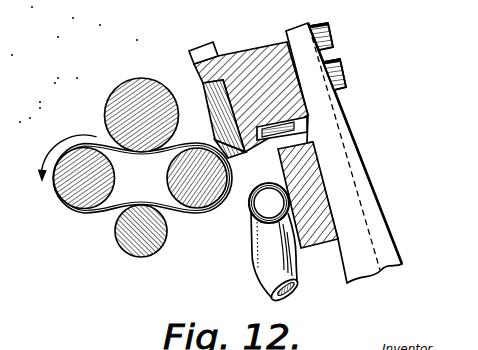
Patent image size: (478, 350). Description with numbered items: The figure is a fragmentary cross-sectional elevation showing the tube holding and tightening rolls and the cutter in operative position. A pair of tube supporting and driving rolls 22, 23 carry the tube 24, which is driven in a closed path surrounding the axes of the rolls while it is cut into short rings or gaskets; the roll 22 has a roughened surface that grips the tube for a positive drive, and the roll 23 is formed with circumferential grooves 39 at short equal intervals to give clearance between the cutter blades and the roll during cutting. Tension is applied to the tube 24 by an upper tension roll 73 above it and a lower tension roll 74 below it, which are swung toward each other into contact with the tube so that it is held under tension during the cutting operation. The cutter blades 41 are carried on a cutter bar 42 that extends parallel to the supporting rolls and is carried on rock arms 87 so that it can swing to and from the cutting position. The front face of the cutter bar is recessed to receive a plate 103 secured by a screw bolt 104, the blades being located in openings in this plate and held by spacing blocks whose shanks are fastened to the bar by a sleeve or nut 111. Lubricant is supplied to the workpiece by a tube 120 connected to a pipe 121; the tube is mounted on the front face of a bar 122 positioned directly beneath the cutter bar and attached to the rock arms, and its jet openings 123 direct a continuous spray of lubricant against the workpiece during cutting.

The tube supporting and driving roll 22 is at (82, 189).
The tube supporting and driving roll 23 is at (203, 197).
The tube 24 is at (101, 151).
The circumferential grooves 39 is at (172, 202).
The cutter blade 41 is at (216, 148).
The cutter bar 42 is at (252, 48).
The upper tension roll 73 is at (135, 88).
The lower tension roll 74 is at (130, 243).
The rock arm 87 is at (364, 167).
The plate 103 is at (218, 96).
The screw bolt 104 is at (202, 49).
The sleeve or nut 111 is at (300, 128).
The lubricant tube 120 is at (268, 183).
The pipe 121 is at (268, 270).
The bar 122 is at (320, 241).
The jet openings 123 is at (252, 198).